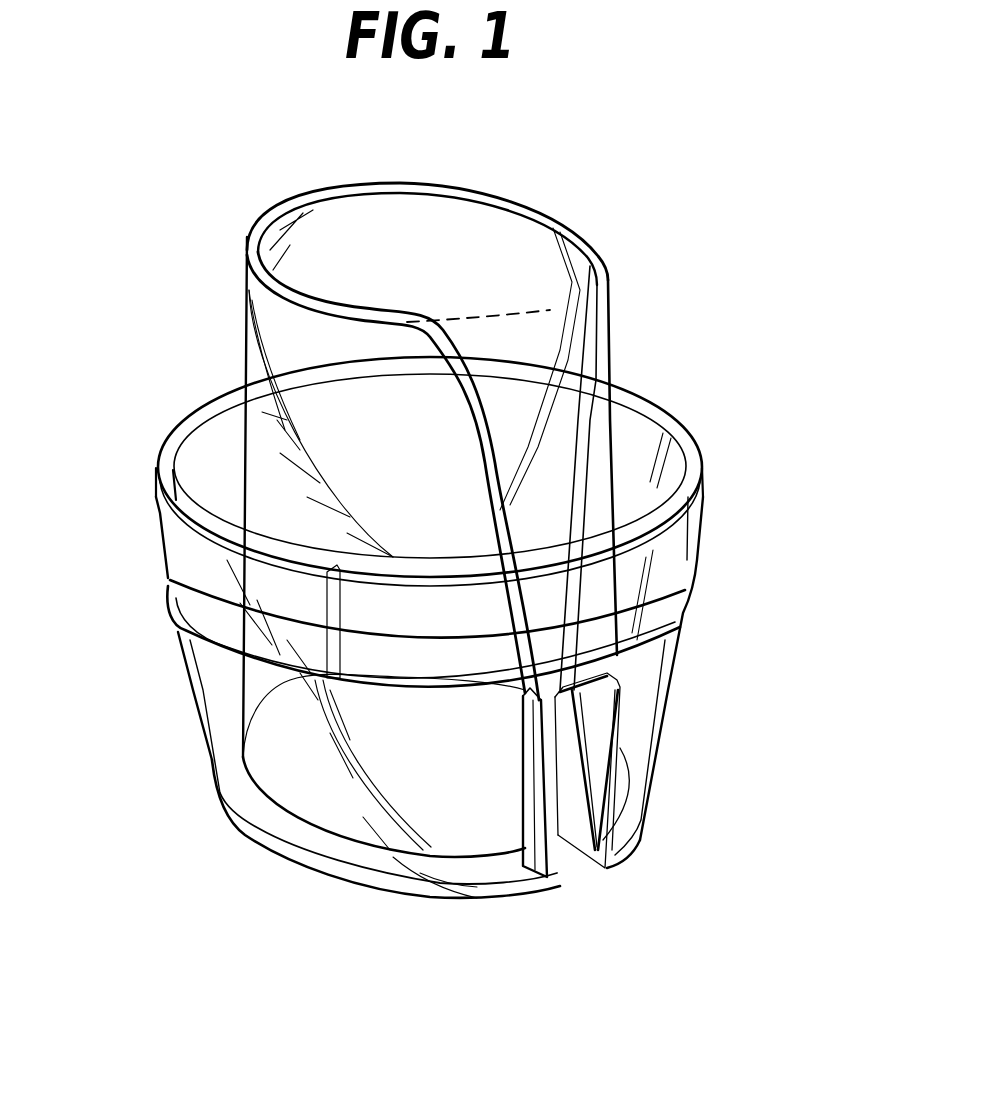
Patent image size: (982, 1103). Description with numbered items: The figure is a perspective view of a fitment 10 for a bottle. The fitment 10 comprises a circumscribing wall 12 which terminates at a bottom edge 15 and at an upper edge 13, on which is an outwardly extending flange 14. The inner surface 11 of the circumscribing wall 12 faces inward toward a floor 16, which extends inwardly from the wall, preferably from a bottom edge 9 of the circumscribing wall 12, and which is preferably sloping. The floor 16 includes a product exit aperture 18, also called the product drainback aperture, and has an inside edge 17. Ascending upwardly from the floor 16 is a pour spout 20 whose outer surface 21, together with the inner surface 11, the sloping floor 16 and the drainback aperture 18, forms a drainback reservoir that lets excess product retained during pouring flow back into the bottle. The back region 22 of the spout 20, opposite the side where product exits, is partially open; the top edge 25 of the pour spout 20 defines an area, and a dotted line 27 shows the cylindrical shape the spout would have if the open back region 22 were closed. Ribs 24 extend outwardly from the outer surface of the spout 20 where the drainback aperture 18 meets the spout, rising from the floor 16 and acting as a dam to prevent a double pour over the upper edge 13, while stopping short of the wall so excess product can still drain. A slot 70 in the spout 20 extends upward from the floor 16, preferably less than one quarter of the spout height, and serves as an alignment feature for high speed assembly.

The fitment 10 is at (449, 665).
The bottom edge 9 is at (290, 866).
The inner surface 11 is at (655, 726).
The circumscribing wall 12 is at (678, 590).
The upper edge 13 is at (170, 473).
The flange 14 is at (193, 518).
The bottom edge 15 is at (223, 815).
The floor 16 is at (483, 870).
The inside edge 17 is at (380, 848).
The product exit aperture 18 is at (570, 857).
The pour spout 20 is at (424, 492).
The outer surface 21 is at (603, 337).
The back region 22 is at (535, 422).
The ribs 24 is at (578, 808).
The top edge 25 is at (527, 208).
The dotted line 27 is at (545, 313).
The slot 70 is at (245, 718).